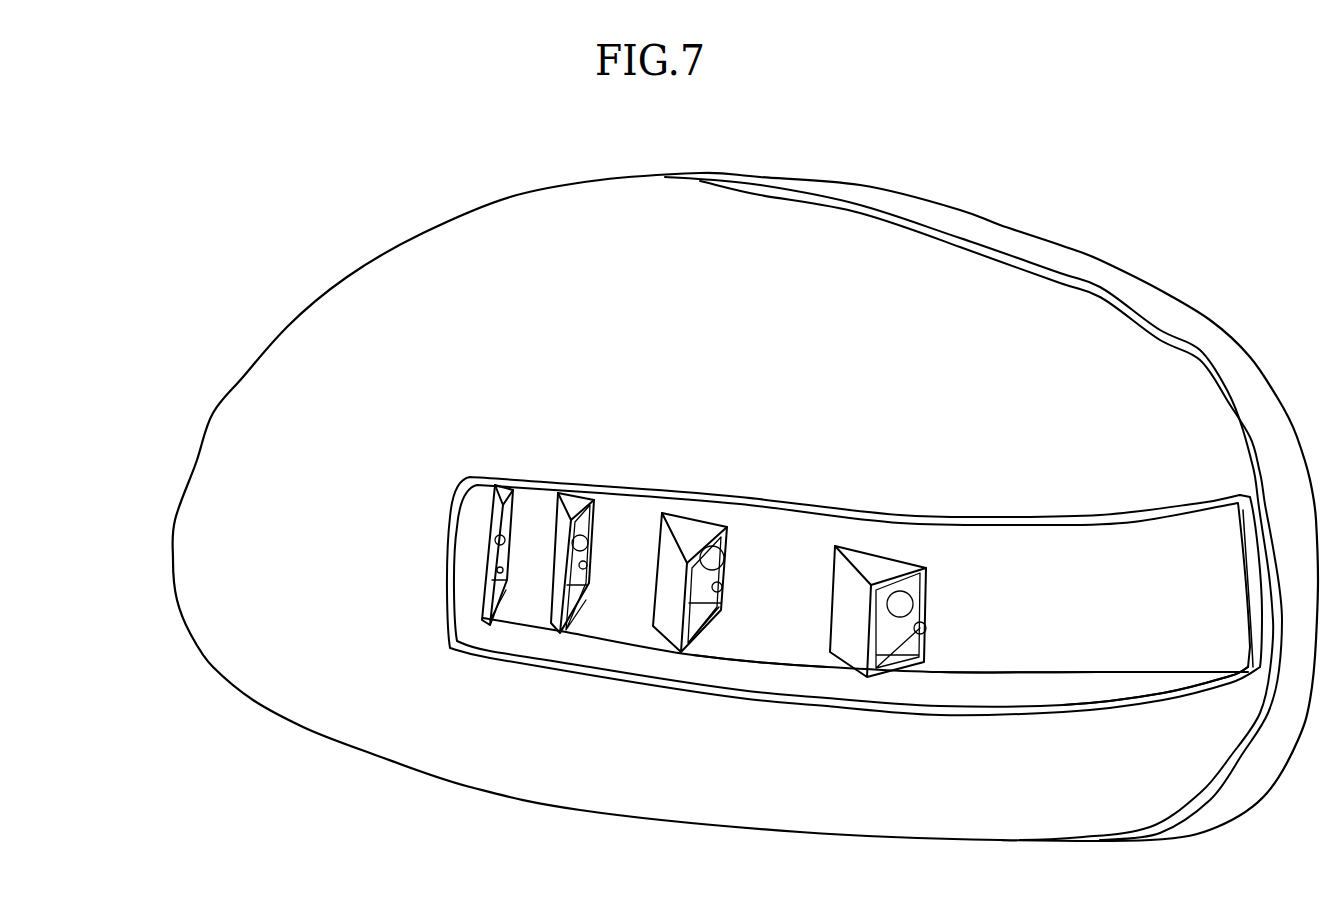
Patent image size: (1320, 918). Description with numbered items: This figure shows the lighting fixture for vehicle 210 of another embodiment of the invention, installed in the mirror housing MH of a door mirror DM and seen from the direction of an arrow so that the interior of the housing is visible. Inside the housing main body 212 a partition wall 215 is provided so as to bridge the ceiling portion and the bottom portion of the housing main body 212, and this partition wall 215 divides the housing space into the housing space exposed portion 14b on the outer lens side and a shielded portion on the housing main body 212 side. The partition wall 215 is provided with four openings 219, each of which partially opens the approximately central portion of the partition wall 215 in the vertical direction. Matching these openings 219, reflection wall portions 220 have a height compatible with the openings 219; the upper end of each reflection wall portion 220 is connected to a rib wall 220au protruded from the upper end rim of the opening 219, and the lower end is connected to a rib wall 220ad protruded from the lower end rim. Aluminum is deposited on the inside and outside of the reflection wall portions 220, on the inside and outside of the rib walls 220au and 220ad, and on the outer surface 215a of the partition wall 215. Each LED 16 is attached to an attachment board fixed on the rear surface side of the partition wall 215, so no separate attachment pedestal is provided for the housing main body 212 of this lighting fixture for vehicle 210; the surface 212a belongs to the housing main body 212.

The door mirror DM is at (1251, 279).
The mirror housing MH is at (1037, 307).
The lighting fixture for vehicle 210 is at (1063, 453).
The housing main body 212 is at (980, 697).
The frame upper surface 212a is at (1147, 681).
The partition wall 215 is at (1106, 648).
The outer surface of the partition wall 215a is at (1037, 651).
The housing space exposed portion 14b is at (778, 676).
The reflection wall portion 220 is at (493, 535).
The rib wall 220au is at (500, 486).
The rib wall 220ad is at (490, 566).
The LED 16 is at (512, 492).
The opening 219 is at (723, 597).